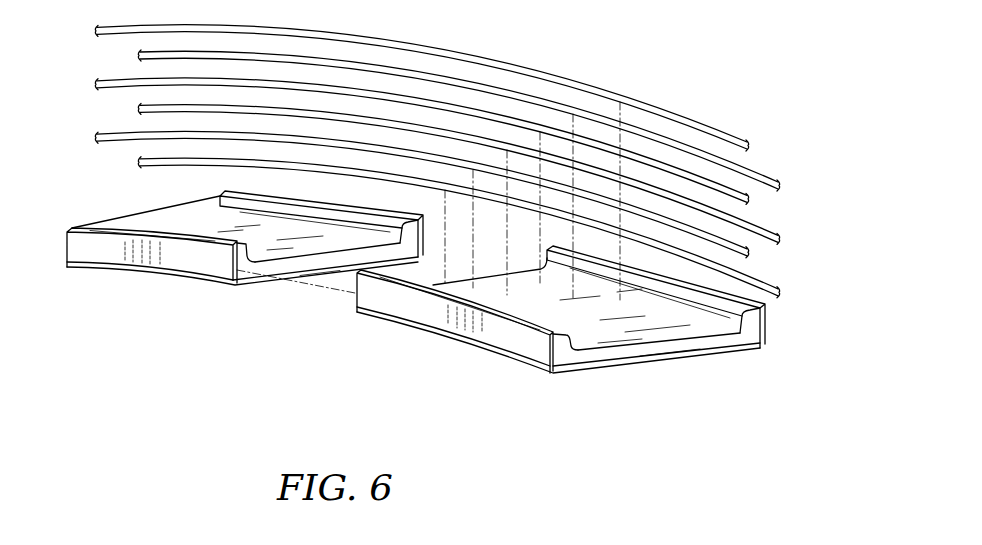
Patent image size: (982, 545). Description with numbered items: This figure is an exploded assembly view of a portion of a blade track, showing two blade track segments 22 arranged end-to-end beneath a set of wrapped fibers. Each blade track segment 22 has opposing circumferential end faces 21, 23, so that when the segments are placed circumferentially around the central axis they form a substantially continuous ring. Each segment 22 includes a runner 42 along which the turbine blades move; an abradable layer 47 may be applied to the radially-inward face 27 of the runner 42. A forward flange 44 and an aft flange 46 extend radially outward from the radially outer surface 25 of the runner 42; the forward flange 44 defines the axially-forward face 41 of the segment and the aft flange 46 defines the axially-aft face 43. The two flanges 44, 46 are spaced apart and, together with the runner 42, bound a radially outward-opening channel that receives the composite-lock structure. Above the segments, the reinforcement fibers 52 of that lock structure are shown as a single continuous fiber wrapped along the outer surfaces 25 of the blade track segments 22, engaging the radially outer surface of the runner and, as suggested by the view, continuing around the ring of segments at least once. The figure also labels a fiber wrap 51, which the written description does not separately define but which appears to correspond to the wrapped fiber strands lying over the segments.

The circumferential end face 21 is at (66, 243).
The blade track segment 22 is at (116, 258).
The circumferential end face 23 is at (236, 272).
The radially outer surface 25 is at (207, 225).
The radially-inward face 27 is at (267, 273).
The axially-forward face 41 is at (182, 258).
The runner 42 is at (296, 266).
The axially-aft face 43 is at (422, 232).
The forward flange 44 is at (118, 227).
The aft flange 46 is at (323, 202).
The abradable layer 47 is at (342, 270).
The rails 51 is at (673, 108).
The reinforcement fibers 52 is at (777, 150).